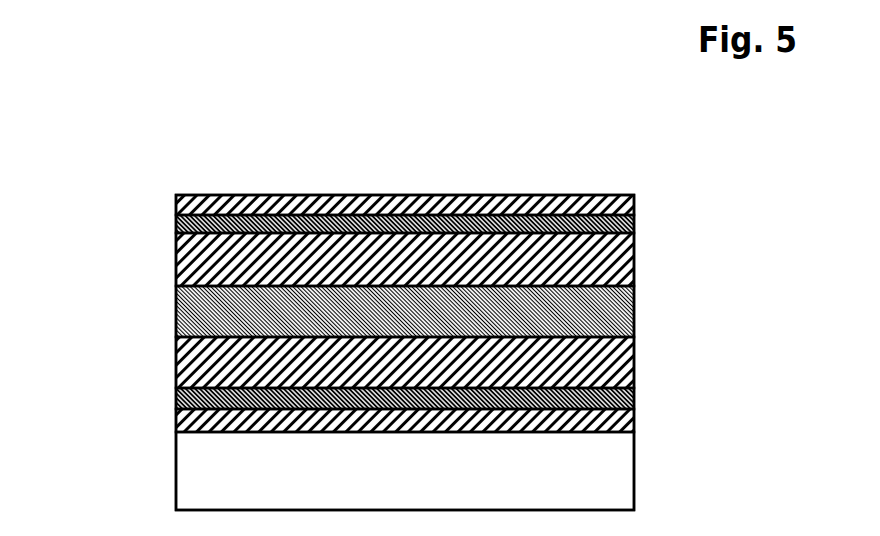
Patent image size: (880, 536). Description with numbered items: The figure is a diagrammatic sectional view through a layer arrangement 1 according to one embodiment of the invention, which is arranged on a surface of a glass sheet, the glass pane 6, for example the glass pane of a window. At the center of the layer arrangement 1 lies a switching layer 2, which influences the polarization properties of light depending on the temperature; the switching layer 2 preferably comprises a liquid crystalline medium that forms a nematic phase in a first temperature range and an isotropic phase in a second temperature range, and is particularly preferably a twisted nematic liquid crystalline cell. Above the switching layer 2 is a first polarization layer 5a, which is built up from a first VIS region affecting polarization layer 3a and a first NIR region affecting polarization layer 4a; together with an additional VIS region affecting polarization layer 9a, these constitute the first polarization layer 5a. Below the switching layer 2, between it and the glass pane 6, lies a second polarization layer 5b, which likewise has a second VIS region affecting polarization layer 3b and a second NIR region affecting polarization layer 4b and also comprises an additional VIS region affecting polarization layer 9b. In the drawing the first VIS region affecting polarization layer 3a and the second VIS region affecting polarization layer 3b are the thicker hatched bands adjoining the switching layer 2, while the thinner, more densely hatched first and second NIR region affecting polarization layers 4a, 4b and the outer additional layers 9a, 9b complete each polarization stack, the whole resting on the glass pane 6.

The layer arrangement 1 is at (262, 178).
The switching layer 2 is at (647, 315).
The first VIS region affecting polarization layer 3a is at (647, 268).
The second VIS region affecting polarization layer 3b is at (647, 370).
The first NIR region affecting polarization layer 4a is at (647, 228).
The second NIR region affecting polarization layer 4b is at (647, 404).
The first polarization layer 5a is at (172, 286).
The second polarization layer 5b is at (172, 430).
The glass pane 6 is at (647, 477).
The additional VIS region affecting polarization layer 9a is at (647, 199).
The additional VIS region affecting polarization layer 9b is at (647, 421).